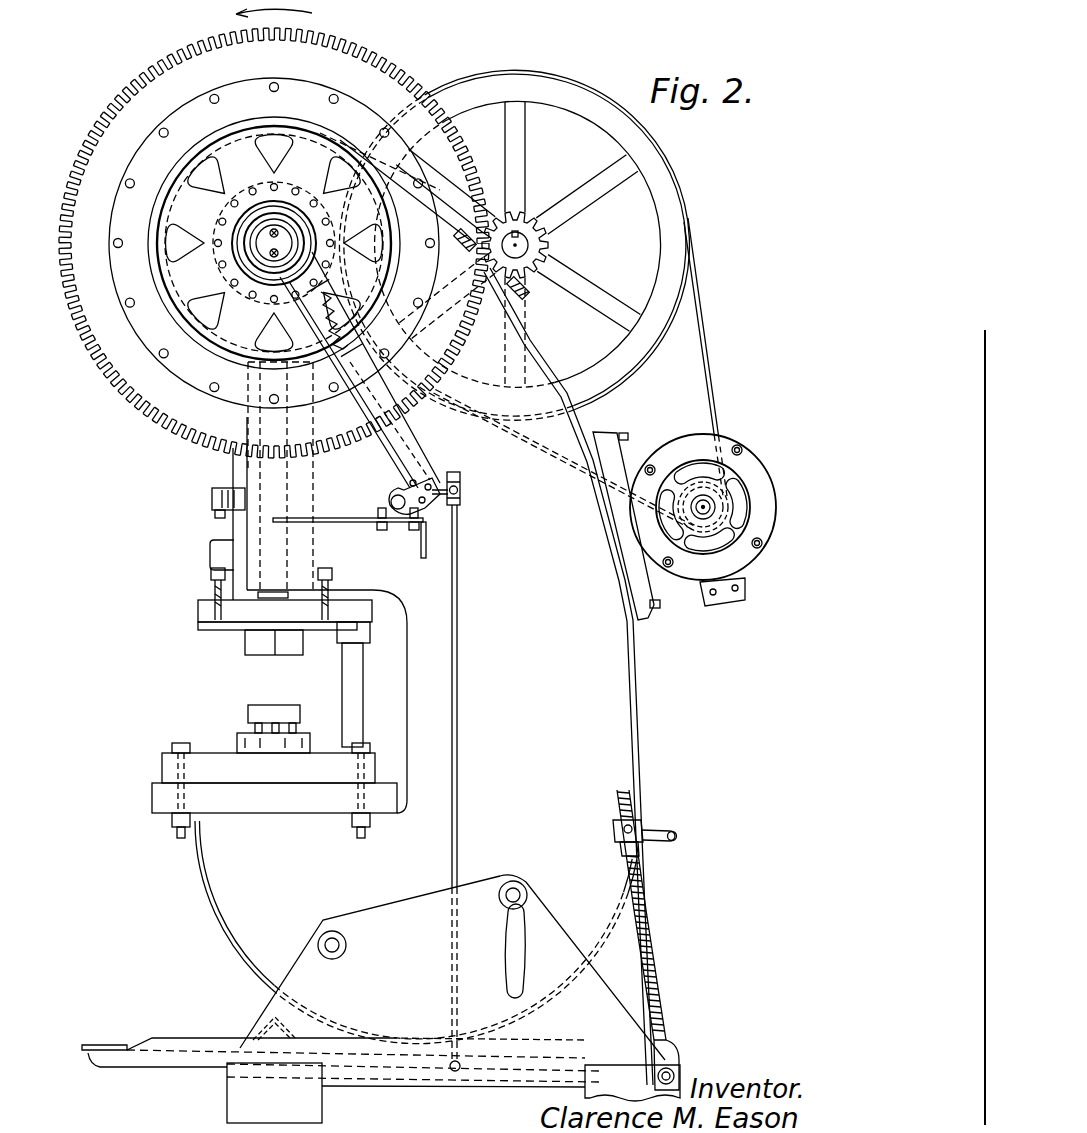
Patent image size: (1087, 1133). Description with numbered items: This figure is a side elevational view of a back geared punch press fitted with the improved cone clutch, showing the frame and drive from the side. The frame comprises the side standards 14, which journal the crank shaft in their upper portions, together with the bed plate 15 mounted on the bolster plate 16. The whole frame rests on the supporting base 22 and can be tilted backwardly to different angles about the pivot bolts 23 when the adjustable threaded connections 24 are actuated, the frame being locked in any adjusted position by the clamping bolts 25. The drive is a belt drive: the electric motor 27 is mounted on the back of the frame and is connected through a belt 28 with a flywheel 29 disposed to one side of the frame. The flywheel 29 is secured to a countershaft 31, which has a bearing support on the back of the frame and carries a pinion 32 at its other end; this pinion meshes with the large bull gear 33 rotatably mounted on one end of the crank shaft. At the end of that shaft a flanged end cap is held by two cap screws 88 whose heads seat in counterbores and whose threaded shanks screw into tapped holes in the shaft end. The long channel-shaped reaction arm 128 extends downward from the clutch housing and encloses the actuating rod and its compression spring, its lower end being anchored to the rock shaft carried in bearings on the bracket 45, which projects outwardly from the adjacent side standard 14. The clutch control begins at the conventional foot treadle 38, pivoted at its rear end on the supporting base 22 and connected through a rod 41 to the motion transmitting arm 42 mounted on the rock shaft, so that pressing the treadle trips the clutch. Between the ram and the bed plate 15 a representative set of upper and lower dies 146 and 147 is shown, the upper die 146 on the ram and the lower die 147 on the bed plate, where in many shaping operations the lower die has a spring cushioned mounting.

The bull gear 33 is at (153, 96).
The cap screws 88 is at (268, 254).
The channel-shaped reaction arm 128 is at (378, 449).
The flywheel 29 is at (684, 227).
The countershaft 31 is at (530, 244).
The pinion 32 is at (552, 290).
The belt 28 is at (716, 334).
The electric motor 27 is at (747, 564).
The side standards 14 is at (206, 885).
The motion transmitting arm 42 is at (452, 474).
The rod 41 is at (459, 786).
The bracket 45 is at (368, 522).
The upper die 146 is at (245, 648).
The lower die 147 is at (262, 710).
The bed plate 15 is at (162, 768).
The bolster plate 16 is at (152, 797).
The pivot bolts 23 is at (319, 936).
The clamping bolts 25 is at (525, 881).
The supporting base 22 is at (268, 1005).
The foot treadle 38 is at (106, 1045).
The adjustable threaded connections 24 is at (643, 885).